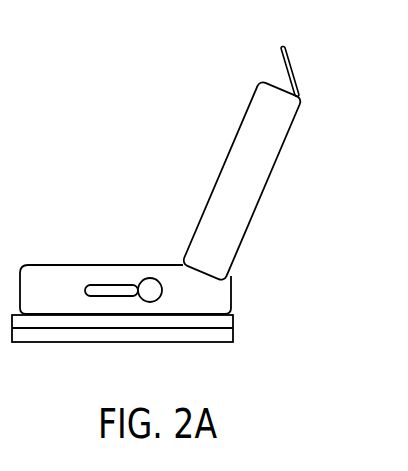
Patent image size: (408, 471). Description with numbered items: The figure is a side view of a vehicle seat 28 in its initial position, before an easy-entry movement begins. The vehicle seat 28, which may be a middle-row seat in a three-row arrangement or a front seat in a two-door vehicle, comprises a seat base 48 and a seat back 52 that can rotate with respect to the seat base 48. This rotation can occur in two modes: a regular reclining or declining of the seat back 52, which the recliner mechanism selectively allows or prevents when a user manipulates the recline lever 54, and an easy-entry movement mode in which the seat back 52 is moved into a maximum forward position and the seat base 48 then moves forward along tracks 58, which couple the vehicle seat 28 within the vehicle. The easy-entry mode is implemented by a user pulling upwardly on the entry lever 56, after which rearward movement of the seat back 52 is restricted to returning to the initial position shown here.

The vehicle seat 28 is at (172, 134).
The seat base 48 is at (44, 275).
The seat back 52 is at (256, 191).
The recline lever 54 is at (105, 287).
The entry lever 56 is at (293, 73).
The tracks 58 is at (239, 328).